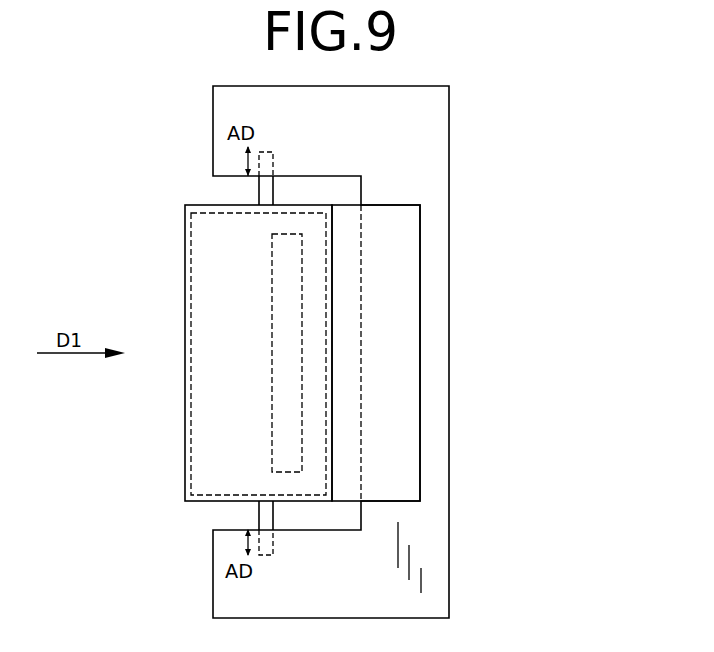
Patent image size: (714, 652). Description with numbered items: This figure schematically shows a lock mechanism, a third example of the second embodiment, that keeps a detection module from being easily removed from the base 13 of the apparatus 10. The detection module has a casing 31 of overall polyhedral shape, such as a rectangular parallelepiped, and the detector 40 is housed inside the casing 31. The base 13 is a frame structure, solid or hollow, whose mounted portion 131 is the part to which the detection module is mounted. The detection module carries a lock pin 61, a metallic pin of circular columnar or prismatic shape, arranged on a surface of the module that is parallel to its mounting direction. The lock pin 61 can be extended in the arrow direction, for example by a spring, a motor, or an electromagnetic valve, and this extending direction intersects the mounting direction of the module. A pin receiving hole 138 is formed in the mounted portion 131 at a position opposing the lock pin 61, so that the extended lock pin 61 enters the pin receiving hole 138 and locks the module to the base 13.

The printing apparatus 10 is at (555, 341).
The base 13 is at (449, 112).
The casing 31 is at (185, 233).
The detector 40 is at (272, 435).
The lock pin 61 is at (259, 190).
The mounted portion 131 is at (355, 527).
The pin receiving hole 138 is at (274, 166).